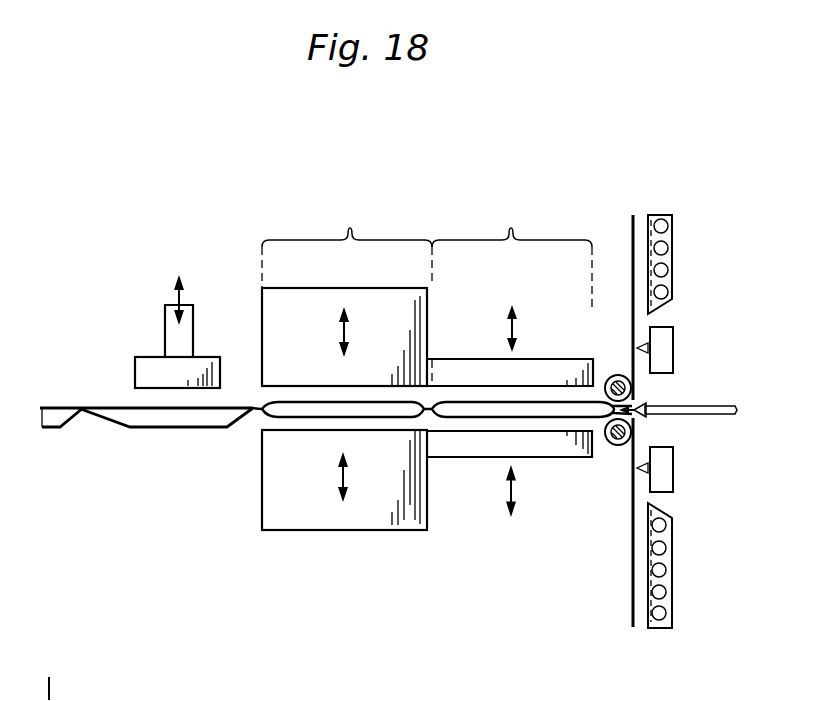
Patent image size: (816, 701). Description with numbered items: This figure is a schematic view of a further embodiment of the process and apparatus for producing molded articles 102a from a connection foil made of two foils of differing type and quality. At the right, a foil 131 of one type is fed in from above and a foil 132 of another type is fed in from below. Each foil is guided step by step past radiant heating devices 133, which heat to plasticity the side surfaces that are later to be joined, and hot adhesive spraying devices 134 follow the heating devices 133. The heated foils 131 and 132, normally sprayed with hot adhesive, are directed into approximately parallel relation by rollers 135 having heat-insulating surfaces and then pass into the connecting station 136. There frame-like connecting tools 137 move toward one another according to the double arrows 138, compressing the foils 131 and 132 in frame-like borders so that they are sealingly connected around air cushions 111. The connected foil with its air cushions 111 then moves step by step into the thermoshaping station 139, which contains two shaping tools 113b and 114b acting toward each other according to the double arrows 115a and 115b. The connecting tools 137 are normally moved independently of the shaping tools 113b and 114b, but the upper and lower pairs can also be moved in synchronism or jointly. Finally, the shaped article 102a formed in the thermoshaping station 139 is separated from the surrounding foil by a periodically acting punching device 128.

The molded article 102a is at (148, 421).
The air cushion 111 is at (303, 414).
The upper shaping tool 113b is at (278, 317).
The lower shaping tool 114b is at (310, 516).
The double arrow of upper shaping tool 115a is at (351, 334).
The double arrow of lower shaping tool 115b is at (350, 482).
The periodically acting device 128 is at (148, 363).
The upper foil 131 is at (631, 233).
The lower foil 132 is at (631, 558).
The radiant heating device 133 is at (668, 222).
The hot adhesive spraying device 134 is at (663, 346).
The roller 135 is at (616, 376).
The connecting station 136 is at (512, 258).
The frame-like connecting tool 137 is at (458, 368).
The double arrow of connecting tools 138 is at (514, 328).
The thermoshaping station 139 is at (347, 295).